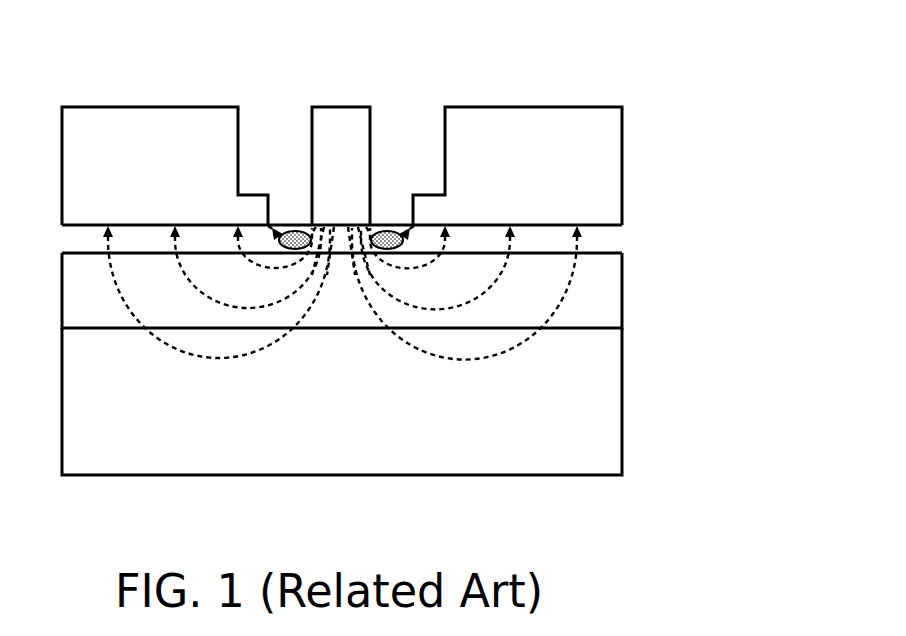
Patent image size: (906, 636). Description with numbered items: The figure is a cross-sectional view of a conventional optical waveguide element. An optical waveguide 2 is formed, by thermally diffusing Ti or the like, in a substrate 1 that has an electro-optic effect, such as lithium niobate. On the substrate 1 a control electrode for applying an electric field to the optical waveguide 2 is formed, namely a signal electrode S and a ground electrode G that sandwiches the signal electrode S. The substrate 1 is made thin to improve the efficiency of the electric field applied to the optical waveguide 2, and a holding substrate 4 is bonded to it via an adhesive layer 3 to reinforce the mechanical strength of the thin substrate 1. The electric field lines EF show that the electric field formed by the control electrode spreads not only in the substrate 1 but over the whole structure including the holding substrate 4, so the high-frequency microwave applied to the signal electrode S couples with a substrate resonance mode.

The substrate 1 is at (600, 240).
The optical waveguide 2 is at (290, 226).
The adhesive layer 3 is at (600, 298).
The holding substrate 4 is at (600, 405).
The signal electrode S is at (335, 123).
The ground electrode G is at (515, 145).
The electric field lines EF is at (475, 359).